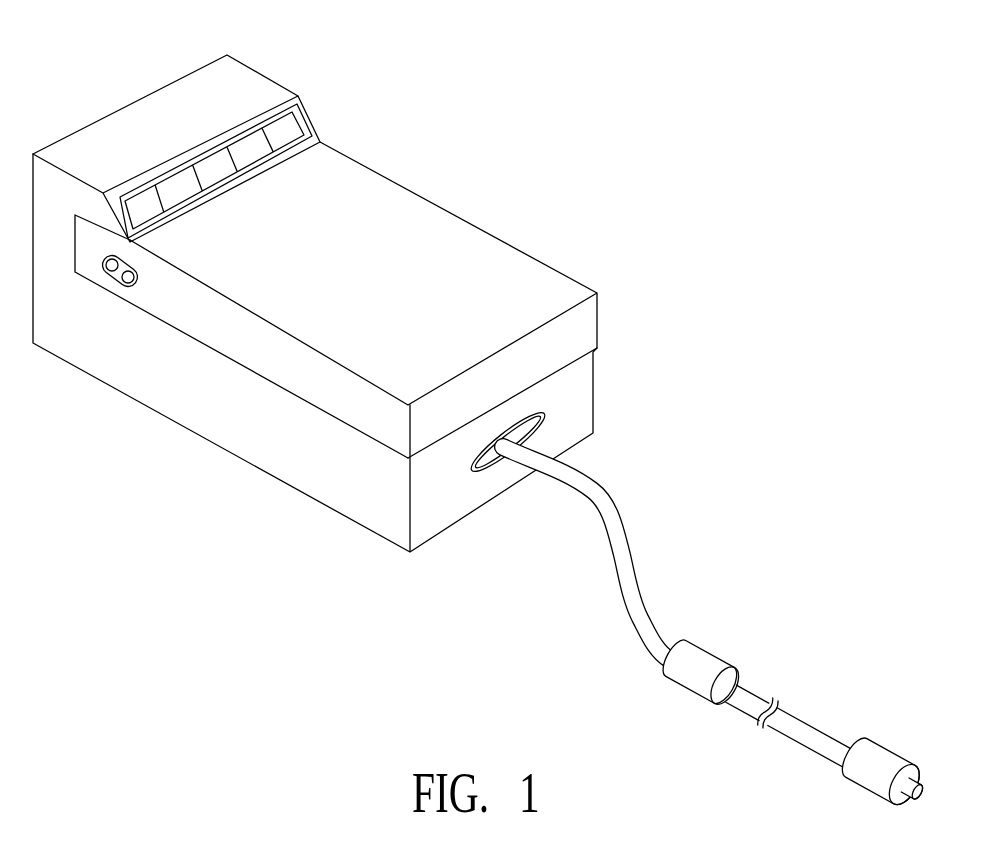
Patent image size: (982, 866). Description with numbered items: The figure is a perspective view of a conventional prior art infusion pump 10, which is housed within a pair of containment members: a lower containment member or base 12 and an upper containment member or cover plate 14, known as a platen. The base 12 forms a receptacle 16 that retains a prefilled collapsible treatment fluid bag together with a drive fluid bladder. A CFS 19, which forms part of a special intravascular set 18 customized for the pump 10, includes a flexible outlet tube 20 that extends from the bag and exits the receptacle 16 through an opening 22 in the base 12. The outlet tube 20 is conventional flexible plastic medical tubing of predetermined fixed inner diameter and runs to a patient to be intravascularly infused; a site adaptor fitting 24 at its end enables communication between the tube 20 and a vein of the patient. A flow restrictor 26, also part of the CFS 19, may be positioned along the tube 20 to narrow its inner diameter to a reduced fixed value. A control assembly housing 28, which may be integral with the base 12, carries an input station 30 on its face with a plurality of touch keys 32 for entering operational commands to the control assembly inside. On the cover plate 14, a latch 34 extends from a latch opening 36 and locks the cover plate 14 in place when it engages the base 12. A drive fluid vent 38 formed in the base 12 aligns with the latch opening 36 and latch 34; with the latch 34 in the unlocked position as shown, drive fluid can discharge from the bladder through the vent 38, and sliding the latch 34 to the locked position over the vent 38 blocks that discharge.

The infusion pump 10 is at (341, 294).
The base 12 is at (382, 493).
The cover plate 14 is at (527, 282).
The receptacle 16 is at (487, 472).
The intravascular set 18 is at (543, 433).
The CFS 19 is at (737, 656).
The outlet tube 20 is at (637, 545).
The opening 22 is at (547, 418).
The site adaptor fitting 24 is at (860, 788).
The flow restrictor 26 is at (716, 656).
The control assembly housing 28 is at (247, 78).
The input station 30 is at (312, 130).
The touch keys 32 is at (180, 177).
The latch 34 is at (128, 286).
The latch opening 36 is at (123, 263).
The drive fluid vent 38 is at (105, 262).